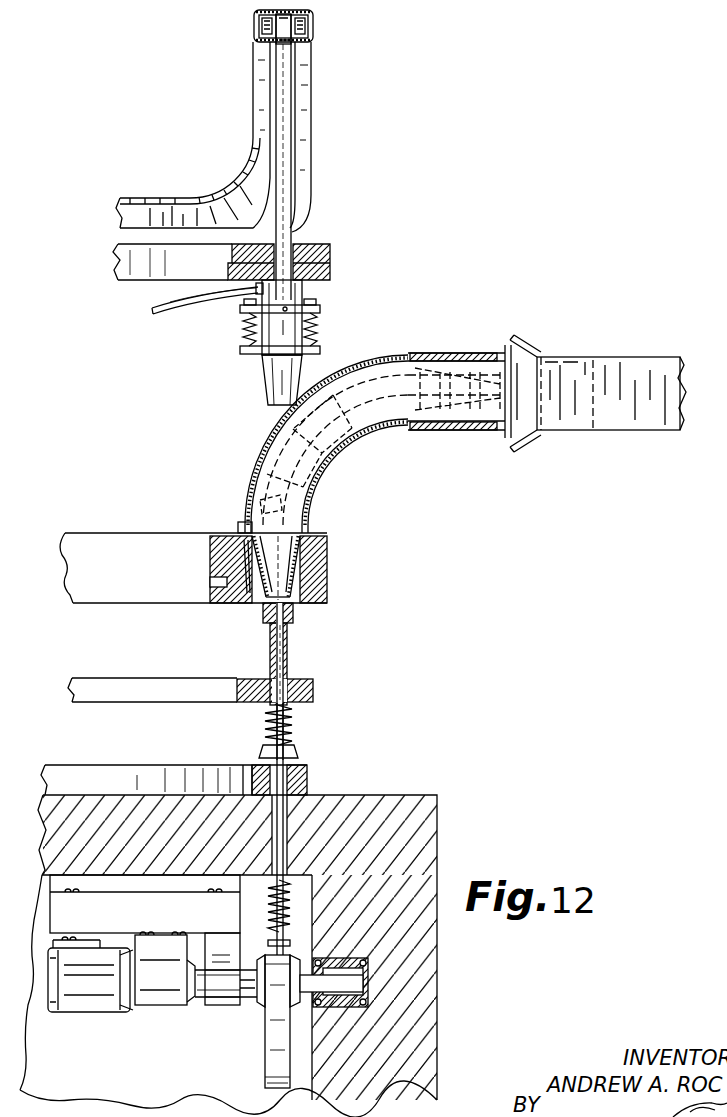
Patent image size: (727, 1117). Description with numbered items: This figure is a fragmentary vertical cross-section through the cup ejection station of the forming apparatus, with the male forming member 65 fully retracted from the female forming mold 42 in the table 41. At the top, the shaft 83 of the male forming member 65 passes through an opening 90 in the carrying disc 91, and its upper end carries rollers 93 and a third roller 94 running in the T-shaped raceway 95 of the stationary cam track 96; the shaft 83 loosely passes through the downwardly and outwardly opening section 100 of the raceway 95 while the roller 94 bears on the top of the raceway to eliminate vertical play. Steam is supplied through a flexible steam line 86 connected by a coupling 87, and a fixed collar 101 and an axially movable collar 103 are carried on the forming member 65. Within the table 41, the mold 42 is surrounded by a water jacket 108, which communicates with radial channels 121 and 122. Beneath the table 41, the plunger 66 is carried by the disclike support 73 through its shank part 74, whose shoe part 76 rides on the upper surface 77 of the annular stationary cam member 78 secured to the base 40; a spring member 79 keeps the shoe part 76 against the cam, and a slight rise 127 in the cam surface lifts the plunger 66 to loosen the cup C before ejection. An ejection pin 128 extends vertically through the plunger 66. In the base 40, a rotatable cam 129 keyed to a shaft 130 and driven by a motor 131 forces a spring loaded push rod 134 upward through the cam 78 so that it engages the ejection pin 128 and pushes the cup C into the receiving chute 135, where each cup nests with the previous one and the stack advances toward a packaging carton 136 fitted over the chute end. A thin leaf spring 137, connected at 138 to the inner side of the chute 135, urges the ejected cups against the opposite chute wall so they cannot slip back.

The base 40 is at (437, 968).
The table 41 is at (140, 533).
The female forming mold 42 is at (253, 600).
The male forming member 65 is at (261, 373).
The plunger 66 is at (295, 621).
The disclike support 73 is at (193, 688).
The shank part 74 is at (290, 674).
The shoe part 76 is at (297, 751).
The upper surface 77 is at (203, 770).
The annular stationary cam member 78 is at (128, 776).
The spring member 79 is at (292, 723).
The supporting shaft 83 is at (291, 226).
The flexible steam line 86 is at (169, 309).
The coupling 87 is at (258, 288).
The opening 90 is at (330, 272).
The carrying disc 91 is at (330, 257).
The roller 93 is at (262, 26).
The third roller 94 is at (285, 44).
The raceway 95 is at (262, 29).
The cam track 96 is at (311, 103).
The downwardly and outwardly opening section 100 is at (270, 163).
The fixed collar 101 is at (322, 310).
The axially movable collar 103 is at (322, 349).
The water jacket 108 is at (303, 589).
The radial channel 121 is at (217, 550).
The radial channel 122 is at (220, 580).
The rise 127 is at (262, 758).
The ejection pin 128 is at (289, 655).
The rotatable cam 129 is at (270, 1036).
The shaft 130 is at (343, 982).
The motor 131 is at (129, 1010).
The spring loaded push rod 134 is at (283, 814).
The receiving chute 135 is at (308, 518).
The packaging carton 136 is at (605, 436).
The leaf spring 137 is at (262, 482).
The pinned connection 138 is at (247, 523).
The cup C is at (317, 503).